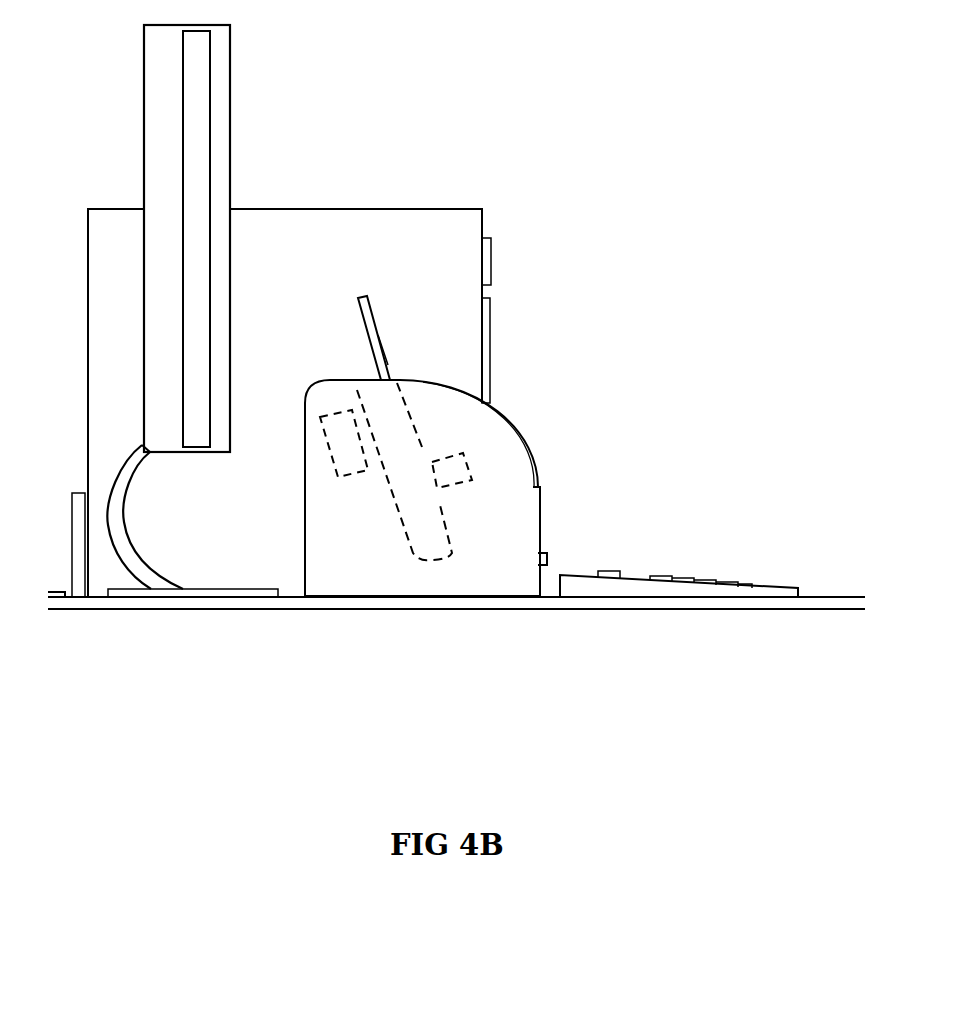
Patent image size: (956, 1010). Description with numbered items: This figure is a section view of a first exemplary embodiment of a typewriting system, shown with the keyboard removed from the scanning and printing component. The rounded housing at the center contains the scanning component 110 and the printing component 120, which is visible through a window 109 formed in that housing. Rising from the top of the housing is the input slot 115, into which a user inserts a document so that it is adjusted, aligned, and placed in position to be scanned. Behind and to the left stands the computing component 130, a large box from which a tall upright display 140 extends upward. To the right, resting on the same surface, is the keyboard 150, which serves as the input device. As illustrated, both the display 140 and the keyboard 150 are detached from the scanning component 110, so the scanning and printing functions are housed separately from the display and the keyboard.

The window 109 is at (517, 437).
The scanning component 110 is at (328, 452).
The input slot 115 is at (353, 380).
The printing component 120 is at (470, 465).
The computing component 130 is at (437, 209).
The display 140 is at (231, 88).
The keyboard 150 is at (782, 583).